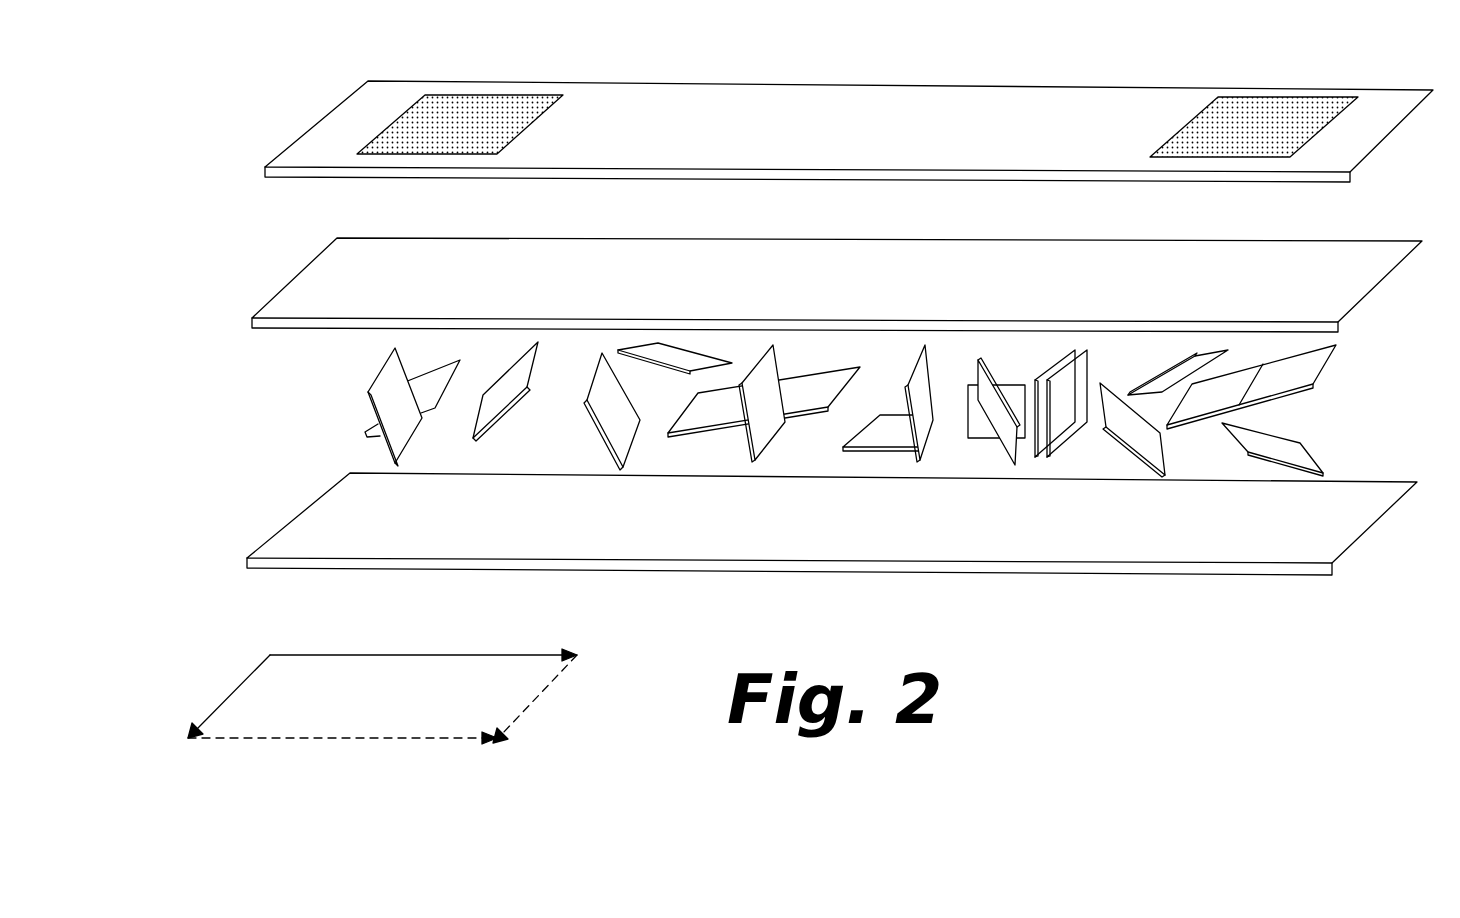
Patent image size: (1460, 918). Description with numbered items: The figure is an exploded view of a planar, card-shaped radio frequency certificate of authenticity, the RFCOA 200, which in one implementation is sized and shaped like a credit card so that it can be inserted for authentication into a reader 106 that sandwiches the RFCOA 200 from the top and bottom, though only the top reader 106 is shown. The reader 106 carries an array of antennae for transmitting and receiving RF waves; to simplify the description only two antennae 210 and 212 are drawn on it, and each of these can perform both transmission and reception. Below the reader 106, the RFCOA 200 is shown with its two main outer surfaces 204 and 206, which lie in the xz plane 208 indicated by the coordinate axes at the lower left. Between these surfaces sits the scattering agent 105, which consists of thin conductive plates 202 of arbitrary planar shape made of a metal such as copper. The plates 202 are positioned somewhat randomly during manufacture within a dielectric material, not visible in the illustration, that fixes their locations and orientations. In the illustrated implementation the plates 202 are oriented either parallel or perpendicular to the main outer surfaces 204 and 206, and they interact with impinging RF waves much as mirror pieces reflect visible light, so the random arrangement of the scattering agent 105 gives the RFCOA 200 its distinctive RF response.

The reader 106 is at (814, 113).
The antenna 210 is at (460, 99).
The antenna 212 is at (1254, 102).
The RFCOA 200 is at (150, 228).
The main outer surface 204 is at (808, 278).
The scattering agent 105 is at (302, 399).
The thin conductive plates 202 is at (584, 437).
The main outer surface 206 is at (805, 524).
The xz plane 208 is at (290, 664).